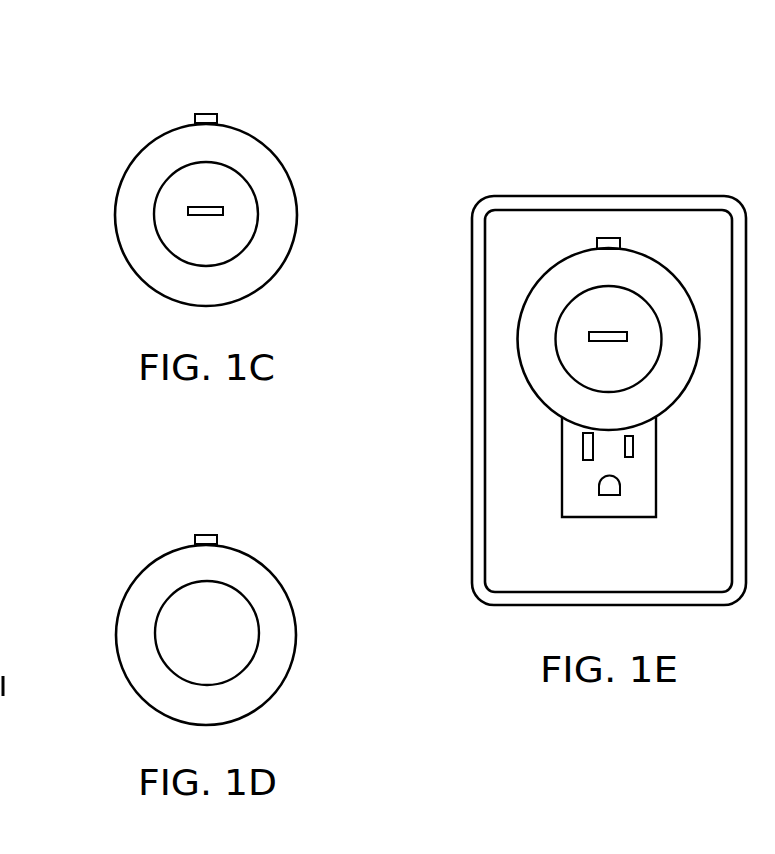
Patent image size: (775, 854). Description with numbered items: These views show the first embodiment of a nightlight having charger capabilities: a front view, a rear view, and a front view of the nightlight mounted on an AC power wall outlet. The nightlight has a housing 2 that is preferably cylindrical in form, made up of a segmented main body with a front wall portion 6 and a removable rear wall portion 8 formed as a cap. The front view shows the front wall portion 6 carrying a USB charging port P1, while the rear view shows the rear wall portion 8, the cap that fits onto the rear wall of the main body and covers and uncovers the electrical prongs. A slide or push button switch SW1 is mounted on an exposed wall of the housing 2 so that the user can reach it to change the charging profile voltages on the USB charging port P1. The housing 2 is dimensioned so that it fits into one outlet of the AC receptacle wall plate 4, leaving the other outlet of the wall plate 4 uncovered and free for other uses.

In FIG. 1C, the housing 2 is at (203, 178).
In FIG. 1D, the housing 2 is at (169, 596).
In FIG. 1E, the housing 2 is at (518, 313).
In FIG. 1E, the AC receptacle wall plate 4 is at (472, 537).
In FIG. 1C, the front wall portion 6 is at (272, 150).
In FIG. 1D, the rear wall portion 8 is at (155, 573).
In FIG. 1C, the USB charging port P1 is at (225, 211).
In FIG. 1C, the switch SW1 is at (206, 114).
In FIG. 1D, the switch SW1 is at (212, 535).